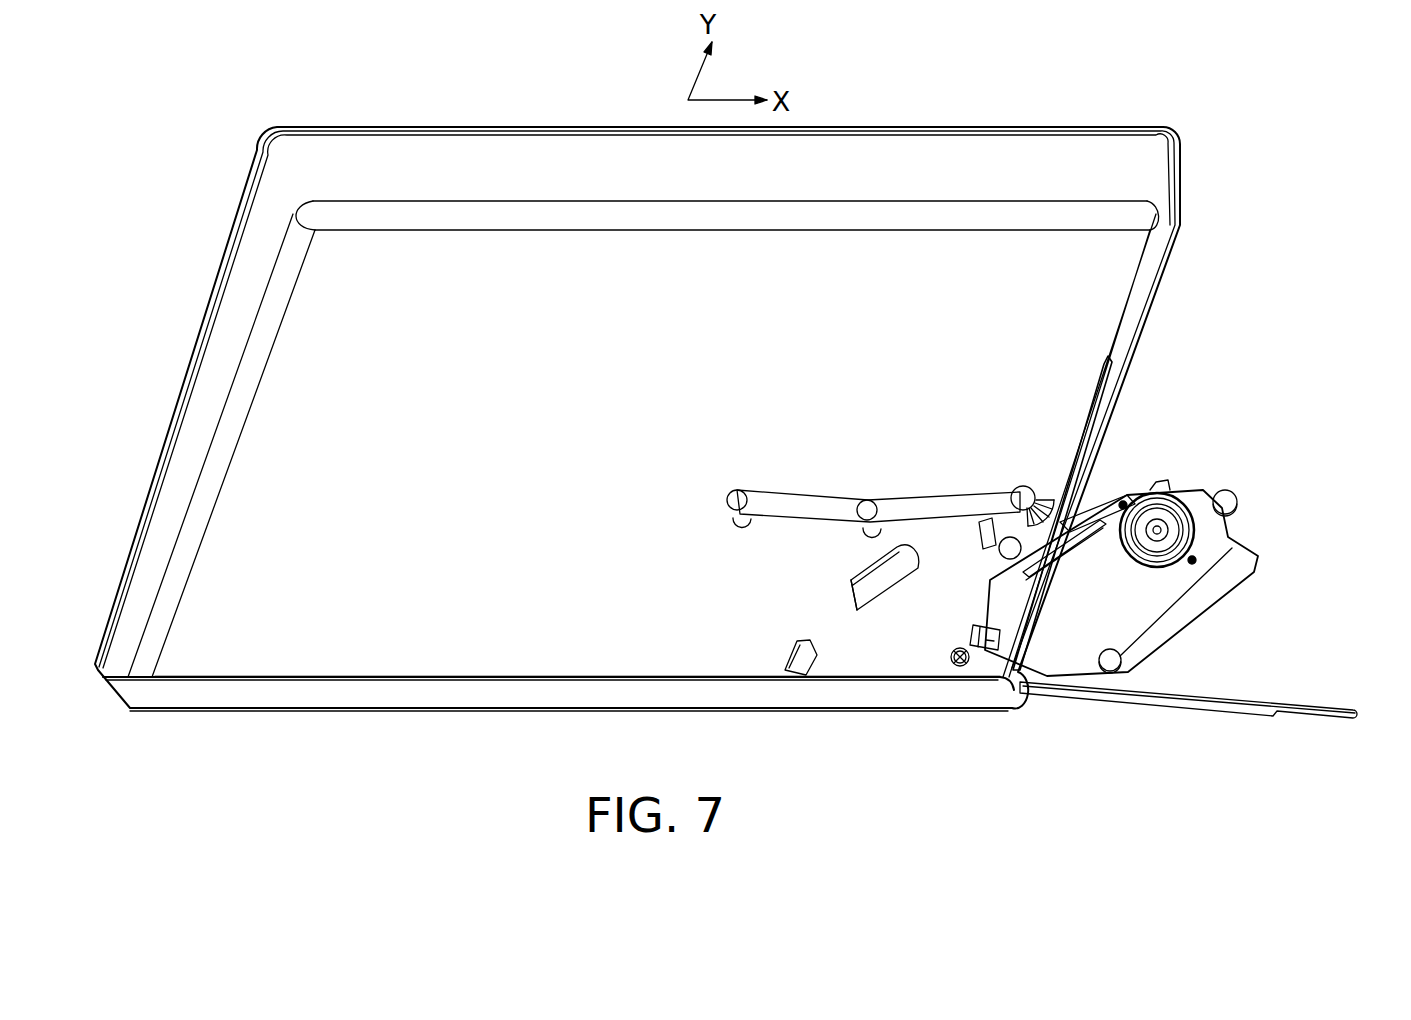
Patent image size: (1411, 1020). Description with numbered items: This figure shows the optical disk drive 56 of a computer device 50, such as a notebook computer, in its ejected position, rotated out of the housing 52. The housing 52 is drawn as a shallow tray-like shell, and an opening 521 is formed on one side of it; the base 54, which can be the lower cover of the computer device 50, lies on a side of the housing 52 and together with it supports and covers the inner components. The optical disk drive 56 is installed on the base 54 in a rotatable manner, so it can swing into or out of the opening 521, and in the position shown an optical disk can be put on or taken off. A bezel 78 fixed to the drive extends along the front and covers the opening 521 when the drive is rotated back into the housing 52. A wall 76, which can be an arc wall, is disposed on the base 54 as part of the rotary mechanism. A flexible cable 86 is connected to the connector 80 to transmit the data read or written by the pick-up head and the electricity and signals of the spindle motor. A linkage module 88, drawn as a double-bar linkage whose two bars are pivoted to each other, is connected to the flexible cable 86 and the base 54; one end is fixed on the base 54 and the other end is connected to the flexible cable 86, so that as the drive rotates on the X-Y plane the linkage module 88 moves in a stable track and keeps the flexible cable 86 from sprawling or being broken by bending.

The computer device 50 is at (197, 122).
The housing 52 is at (1155, 285).
The opening 521 is at (1087, 443).
The base 54 is at (566, 634).
The optical disk drive 56 is at (1220, 470).
The wall 76 is at (880, 588).
The bezel 78 is at (1276, 713).
The connector 80 is at (1095, 490).
The flexible cable 86 is at (1046, 492).
The linkage module 88 is at (817, 488).